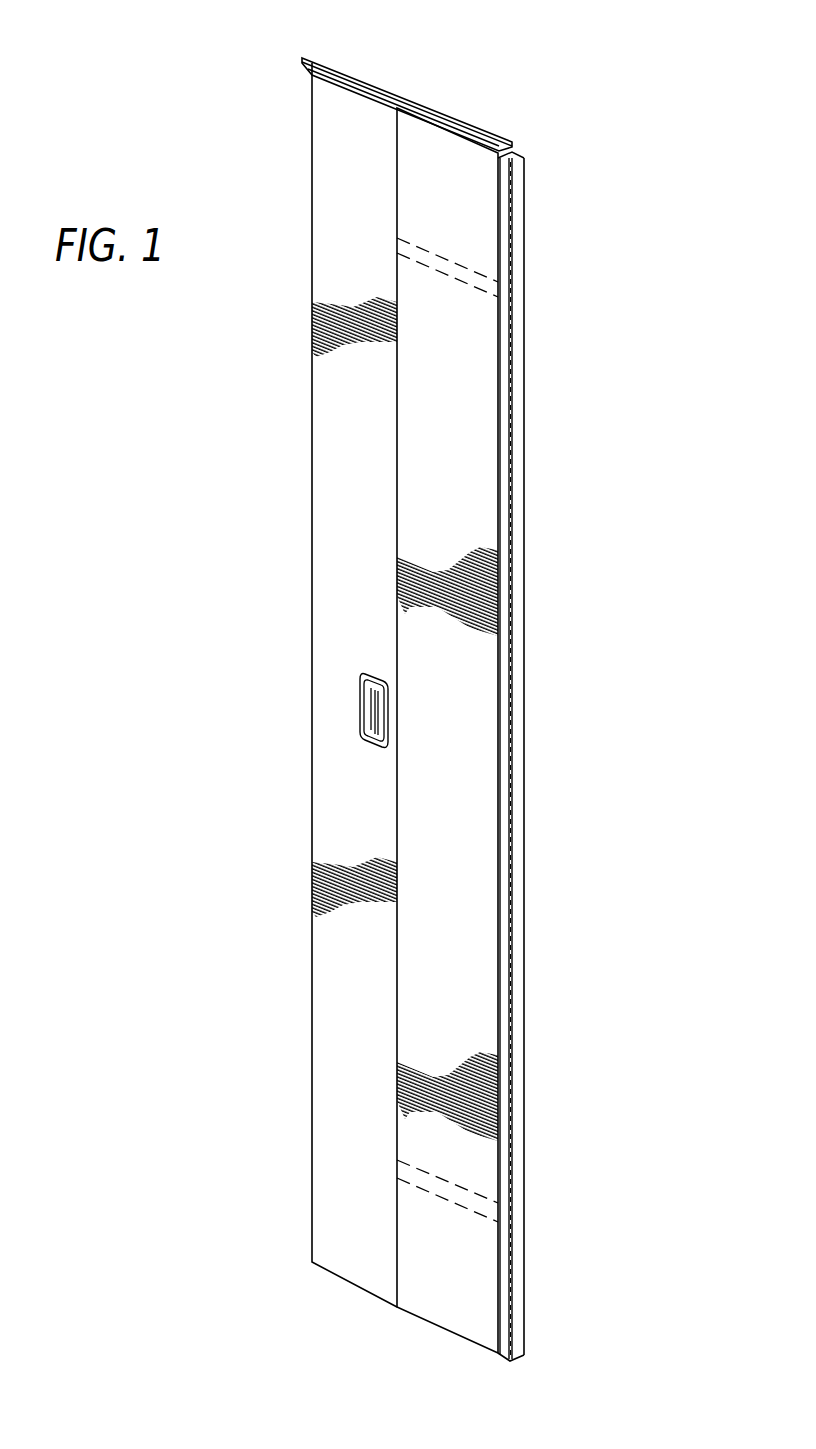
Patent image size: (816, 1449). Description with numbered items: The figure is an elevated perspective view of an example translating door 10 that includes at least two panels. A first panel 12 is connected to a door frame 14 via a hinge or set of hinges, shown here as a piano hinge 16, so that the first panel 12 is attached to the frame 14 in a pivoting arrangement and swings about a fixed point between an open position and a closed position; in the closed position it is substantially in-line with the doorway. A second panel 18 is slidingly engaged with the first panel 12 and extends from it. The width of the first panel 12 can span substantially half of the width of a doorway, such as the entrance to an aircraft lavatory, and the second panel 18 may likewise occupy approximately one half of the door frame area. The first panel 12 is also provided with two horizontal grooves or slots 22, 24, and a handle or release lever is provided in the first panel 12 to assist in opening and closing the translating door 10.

The translating door 10 is at (614, 474).
The first panel 12 is at (468, 190).
The door frame 14 is at (317, 57).
The piano hinge 16 is at (520, 154).
The second panel 18 is at (347, 117).
The horizontal groove 22 is at (477, 293).
The horizontal groove 24 is at (448, 1190).